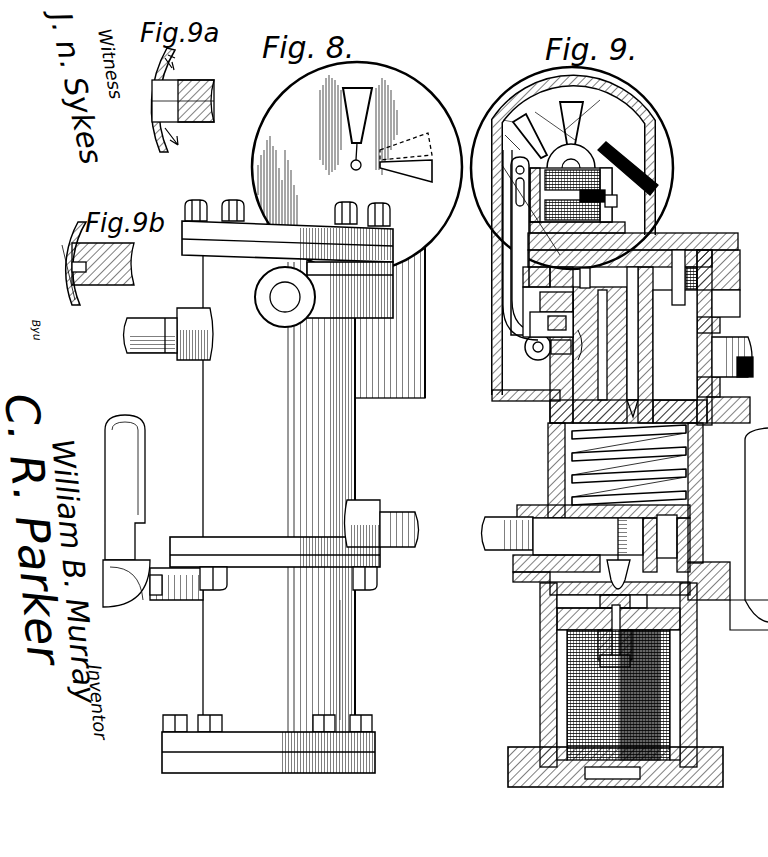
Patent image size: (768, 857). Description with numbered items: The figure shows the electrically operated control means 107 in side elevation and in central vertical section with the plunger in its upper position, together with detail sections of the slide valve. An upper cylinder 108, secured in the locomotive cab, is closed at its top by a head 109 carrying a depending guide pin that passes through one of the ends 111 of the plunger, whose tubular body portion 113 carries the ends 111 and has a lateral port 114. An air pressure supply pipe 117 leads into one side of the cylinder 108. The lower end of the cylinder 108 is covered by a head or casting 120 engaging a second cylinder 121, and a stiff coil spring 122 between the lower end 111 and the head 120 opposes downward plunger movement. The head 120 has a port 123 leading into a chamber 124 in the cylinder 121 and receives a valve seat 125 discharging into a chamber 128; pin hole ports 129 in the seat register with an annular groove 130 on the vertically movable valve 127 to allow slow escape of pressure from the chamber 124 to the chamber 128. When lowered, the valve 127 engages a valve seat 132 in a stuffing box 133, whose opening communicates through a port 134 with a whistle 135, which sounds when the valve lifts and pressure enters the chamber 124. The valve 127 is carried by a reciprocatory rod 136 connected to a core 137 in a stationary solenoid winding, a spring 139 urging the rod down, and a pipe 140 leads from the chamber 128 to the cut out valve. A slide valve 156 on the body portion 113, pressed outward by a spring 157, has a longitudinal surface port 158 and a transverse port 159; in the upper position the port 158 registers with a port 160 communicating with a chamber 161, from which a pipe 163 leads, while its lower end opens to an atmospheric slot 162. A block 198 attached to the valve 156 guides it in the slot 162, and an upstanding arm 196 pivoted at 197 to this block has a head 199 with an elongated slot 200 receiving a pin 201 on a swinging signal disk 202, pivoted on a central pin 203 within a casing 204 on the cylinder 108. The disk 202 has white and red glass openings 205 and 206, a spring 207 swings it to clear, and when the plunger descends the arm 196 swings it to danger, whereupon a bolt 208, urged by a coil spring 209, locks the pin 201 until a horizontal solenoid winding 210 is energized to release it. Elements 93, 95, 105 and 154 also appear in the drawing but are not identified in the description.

In FIG. 9, the passage 93 is at (535, 277).
In FIG. 9, the passage 95 is at (575, 335).
In FIG. 9, the bracket 105 is at (712, 320).
In FIG. 8, the electrically operated control means 107 is at (380, 450).
In FIG. 9, the electrically operated control means 107 is at (726, 446).
In FIG. 8, the upper cylinder 108 is at (279, 496).
In FIG. 8, the head 109 is at (312, 221).
In FIG. 9, the ends of plunger 111 is at (700, 240).
In FIG. 9, the tubular body portion 113 is at (712, 300).
In FIG. 9, the lateral port 114 is at (675, 325).
In FIG. 8, the air pressure supply pipe 117 is at (140, 353).
In FIG. 8, the head or casting 120 is at (380, 557).
In FIG. 8, the second cylinder 121 is at (355, 625).
In FIG. 9, the second cylinder 121 is at (680, 660).
In FIG. 9, the compressible coil spring 122 is at (686, 470).
In FIG. 9, the port 123 is at (665, 545).
In FIG. 9, the chamber 124 is at (580, 600).
In FIG. 9, the valve seat 125 is at (560, 572).
In FIG. 9, the vertically movable valve 127 is at (628, 590).
In FIG. 9, the chamber 128 is at (620, 530).
In FIG. 9, the pin hole ports 129 is at (600, 560).
In FIG. 9, the annular pin hole groove 130 is at (570, 590).
In FIG. 9, the valve seat 132 is at (600, 618).
In FIG. 9, the stuffing box 133 is at (595, 640).
In FIG. 9, the port 134 is at (625, 603).
In FIG. 8, the whistle 135 is at (135, 497).
In FIG. 9, the whistle 135 is at (670, 720).
In FIG. 9, the reciprocatory rod 136 is at (598, 658).
In FIG. 9, the vertically movable core 137 is at (690, 680).
In FIG. 9, the spring 139 is at (545, 508).
In FIG. 8, the pipe 140 is at (420, 530).
In FIG. 9, the pipe 140 is at (484, 530).
In FIG. 9a, the arc segment 154 is at (152, 142).
In FIG. 9a, the slide valve 156 is at (214, 80).
In FIG. 9b, the slide valve 156 is at (112, 285).
In FIG. 9, the slide valve 156 is at (548, 432).
In FIG. 9, the spring 157 is at (555, 416).
In FIG. 9b, the longitudinal groove or surface port 158 is at (66, 276).
In FIG. 9, the longitudinal groove or surface port 158 is at (558, 376).
In FIG. 9, the transverse port 159 is at (535, 290).
In FIG. 9, the port 160 is at (535, 320).
In FIG. 8, the chamber 161 is at (352, 302).
In FIG. 9, the chamber 161 is at (545, 302).
In FIG. 9, the opening or slot 162 is at (500, 402).
In FIG. 8, the pipe 163 is at (280, 308).
In FIG. 9, the upstanding arm 196 is at (520, 262).
In FIG. 9, the pivotal connection 197 is at (525, 347).
In FIG. 9, the block 198 is at (515, 366).
In FIG. 9, the head 199 is at (510, 215).
In FIG. 9, the elongated slot or opening 200 is at (502, 128).
In FIG. 9, the pin 201 is at (495, 110).
In FIG. 9, the swinging signal disk 202 is at (620, 135).
In FIG. 8, the centrally arranged pin 203 is at (351, 165).
In FIG. 9, the centrally arranged pin 203 is at (585, 162).
In FIG. 8, the casing or housing 204 is at (357, 167).
In FIG. 9, the casing or housing 204 is at (655, 112).
In FIG. 8, the segmental opening 205 is at (372, 112).
In FIG. 9, the segmental opening 205 is at (583, 110).
In FIG. 8, the segmental opening 206 is at (415, 182).
In FIG. 9, the segmental opening 206 is at (575, 100).
In FIG. 9, the spring 207 is at (612, 170).
In FIG. 9, the bolt 208 is at (612, 185).
In FIG. 9, the compressible coil spring 209 is at (617, 200).
In FIG. 9, the horizontal solenoid winding 210 is at (625, 228).